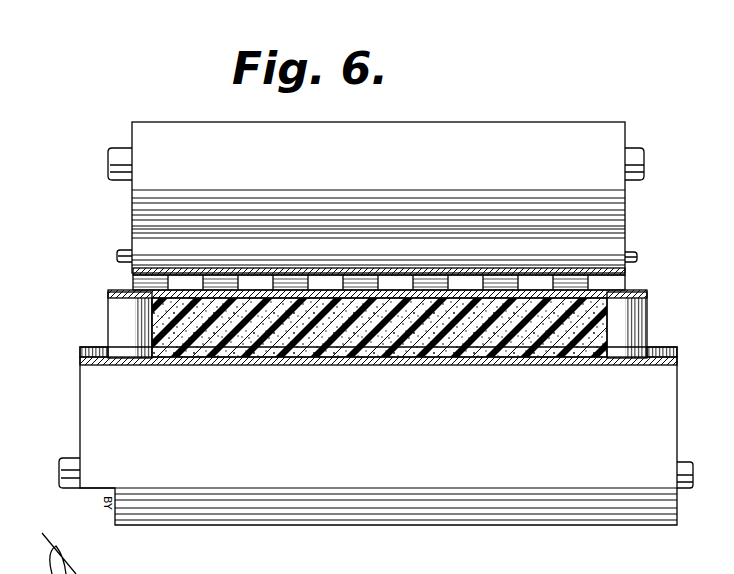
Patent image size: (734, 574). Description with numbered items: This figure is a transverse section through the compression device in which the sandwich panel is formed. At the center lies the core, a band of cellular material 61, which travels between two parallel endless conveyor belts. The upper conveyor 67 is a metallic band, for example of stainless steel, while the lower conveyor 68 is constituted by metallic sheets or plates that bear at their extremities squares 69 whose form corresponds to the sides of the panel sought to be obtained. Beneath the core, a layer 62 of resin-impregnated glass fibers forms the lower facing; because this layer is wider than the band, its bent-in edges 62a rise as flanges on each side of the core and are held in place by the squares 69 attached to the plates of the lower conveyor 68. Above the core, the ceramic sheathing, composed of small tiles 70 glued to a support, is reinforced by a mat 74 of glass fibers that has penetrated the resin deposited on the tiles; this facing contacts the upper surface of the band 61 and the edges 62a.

The band of cellular material 61 is at (533, 338).
The layer of glass fibers 62 is at (379, 351).
The bent-in edges 62a is at (130, 297).
The upper conveyor belt 67 is at (148, 270).
The lower conveyor belt 68 is at (256, 365).
The squares 69 is at (632, 332).
The ceramic tiles 70 is at (365, 280).
The mat of glass fibers 74 is at (157, 283).